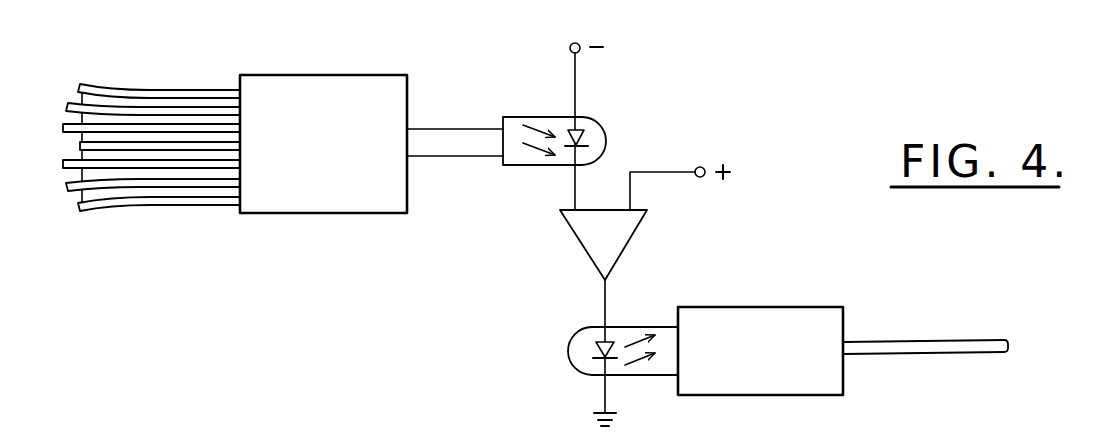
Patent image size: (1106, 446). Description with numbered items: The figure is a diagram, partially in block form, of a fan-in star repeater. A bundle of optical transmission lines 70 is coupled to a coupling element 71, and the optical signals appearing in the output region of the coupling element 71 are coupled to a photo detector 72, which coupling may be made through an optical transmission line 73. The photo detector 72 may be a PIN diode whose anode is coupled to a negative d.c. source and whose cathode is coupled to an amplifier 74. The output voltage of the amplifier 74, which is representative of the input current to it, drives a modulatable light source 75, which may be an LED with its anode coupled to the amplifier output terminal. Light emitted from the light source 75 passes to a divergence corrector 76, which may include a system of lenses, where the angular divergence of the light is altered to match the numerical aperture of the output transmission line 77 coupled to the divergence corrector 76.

The bundle of optical transmission lines 70 is at (156, 213).
The coupling element 71 is at (335, 75).
The photo detector 72 is at (598, 124).
The optical transmission line 73 is at (480, 156).
The amplifier 74 is at (627, 245).
The modulatable light source 75 is at (580, 366).
The divergence corrector 76 is at (745, 307).
The output transmission line 77 is at (937, 341).